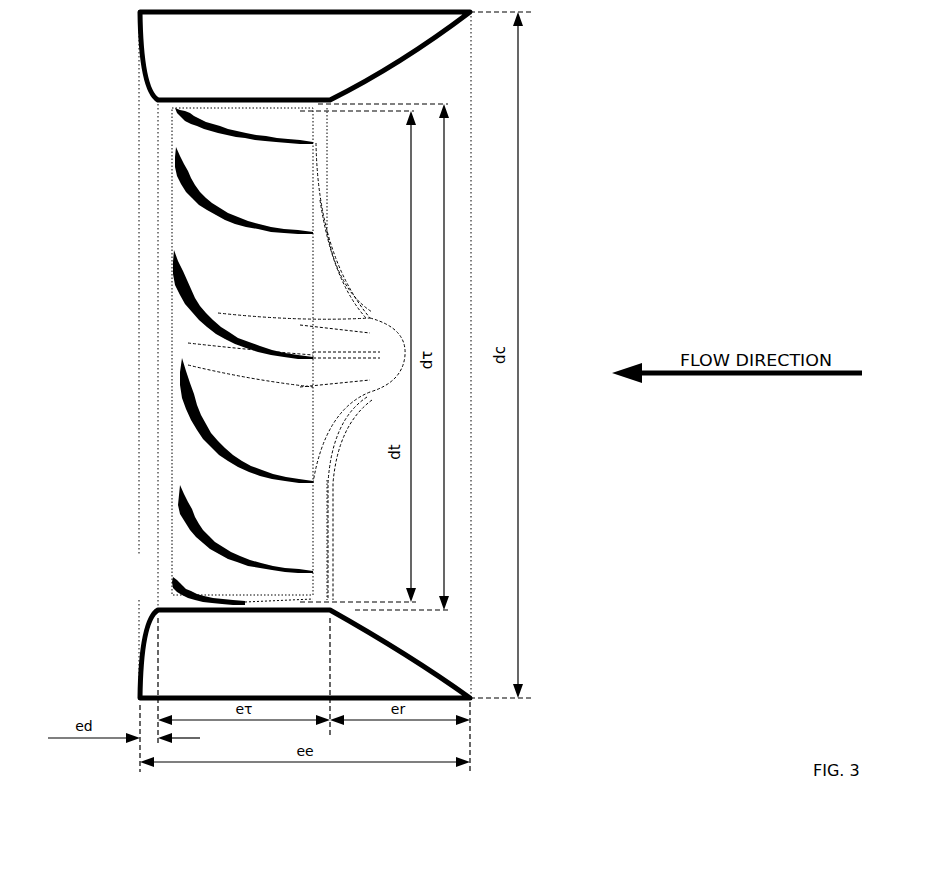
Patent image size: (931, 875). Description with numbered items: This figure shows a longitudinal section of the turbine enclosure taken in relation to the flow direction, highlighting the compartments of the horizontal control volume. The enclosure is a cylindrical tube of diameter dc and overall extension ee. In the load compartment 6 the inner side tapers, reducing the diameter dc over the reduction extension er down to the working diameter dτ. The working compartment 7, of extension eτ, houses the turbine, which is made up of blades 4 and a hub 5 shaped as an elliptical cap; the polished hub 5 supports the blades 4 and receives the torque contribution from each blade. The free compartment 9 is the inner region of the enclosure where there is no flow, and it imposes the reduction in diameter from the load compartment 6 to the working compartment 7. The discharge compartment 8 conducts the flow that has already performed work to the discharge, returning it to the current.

The blades 4 is at (275, 120).
The hub 5 is at (382, 355).
The load compartment 6 is at (348, 496).
The working compartment 7 is at (321, 135).
The discharge compartment 8 is at (147, 198).
The free compartment 9 is at (305, 355).